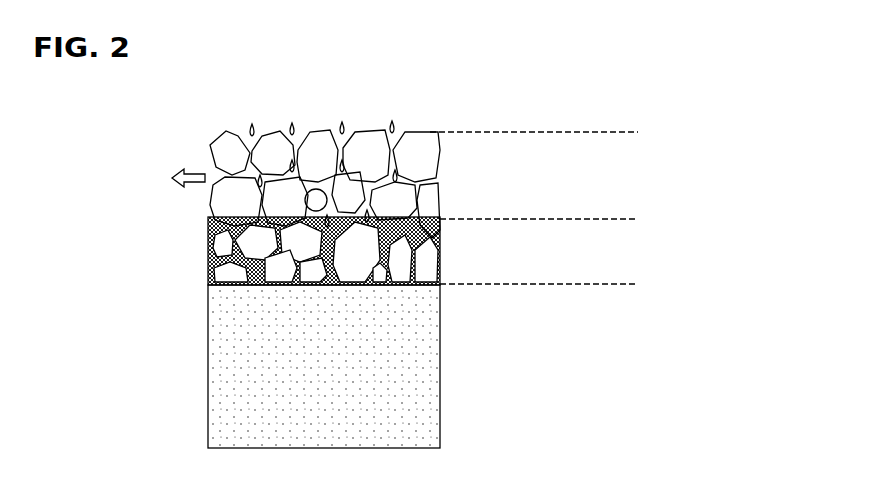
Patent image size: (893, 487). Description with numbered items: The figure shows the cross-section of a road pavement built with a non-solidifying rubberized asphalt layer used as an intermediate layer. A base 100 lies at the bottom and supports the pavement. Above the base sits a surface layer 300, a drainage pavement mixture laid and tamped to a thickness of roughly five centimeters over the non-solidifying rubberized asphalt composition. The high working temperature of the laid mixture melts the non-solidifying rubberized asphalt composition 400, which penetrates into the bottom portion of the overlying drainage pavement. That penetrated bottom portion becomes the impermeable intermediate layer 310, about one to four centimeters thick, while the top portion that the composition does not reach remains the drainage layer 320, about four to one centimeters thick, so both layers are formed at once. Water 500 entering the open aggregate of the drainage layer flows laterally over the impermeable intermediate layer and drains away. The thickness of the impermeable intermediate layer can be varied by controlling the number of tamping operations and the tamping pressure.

The base ground layer 100 is at (353, 383).
The aggregate pavement layer 300 is at (484, 283).
The lower bonding sub-layer 310 is at (624, 283).
The upper aggregate sub-layer 320 is at (624, 133).
The binder/adhesive filled layer 400 is at (253, 287).
The water flow direction 500 is at (167, 179).